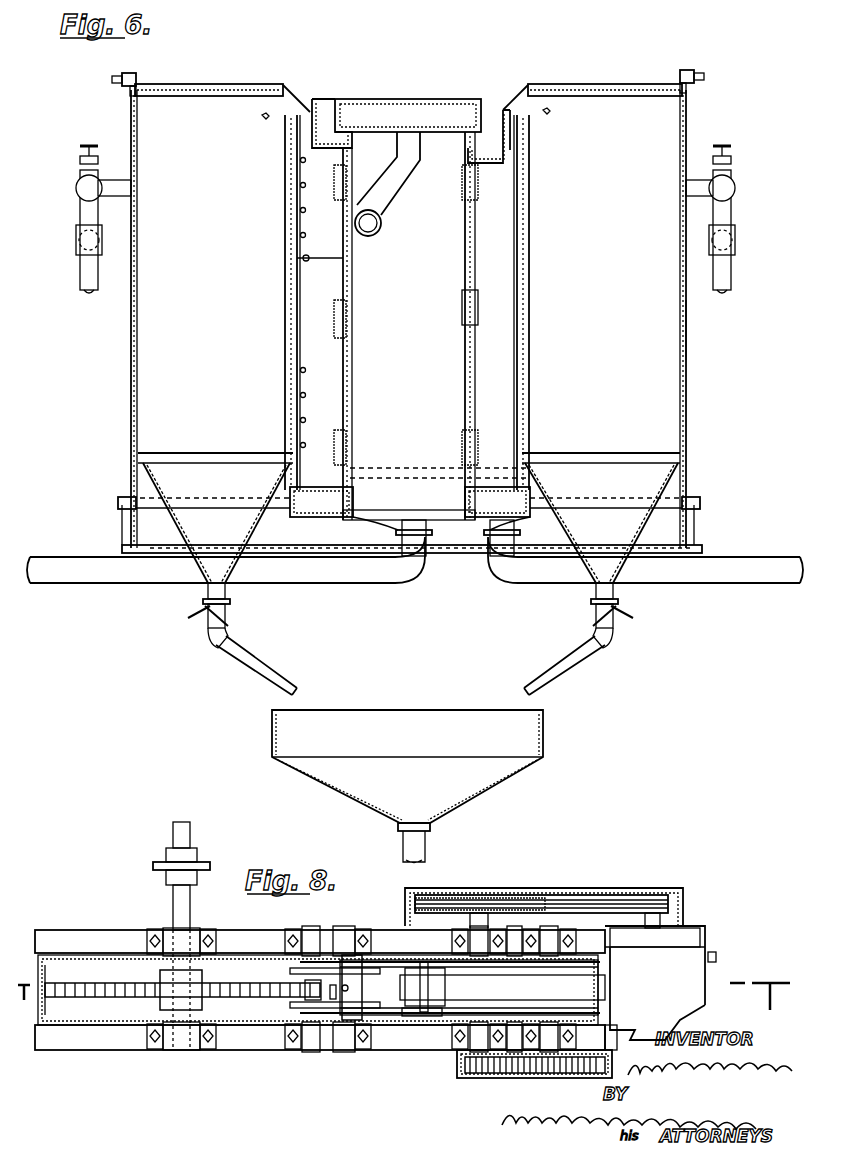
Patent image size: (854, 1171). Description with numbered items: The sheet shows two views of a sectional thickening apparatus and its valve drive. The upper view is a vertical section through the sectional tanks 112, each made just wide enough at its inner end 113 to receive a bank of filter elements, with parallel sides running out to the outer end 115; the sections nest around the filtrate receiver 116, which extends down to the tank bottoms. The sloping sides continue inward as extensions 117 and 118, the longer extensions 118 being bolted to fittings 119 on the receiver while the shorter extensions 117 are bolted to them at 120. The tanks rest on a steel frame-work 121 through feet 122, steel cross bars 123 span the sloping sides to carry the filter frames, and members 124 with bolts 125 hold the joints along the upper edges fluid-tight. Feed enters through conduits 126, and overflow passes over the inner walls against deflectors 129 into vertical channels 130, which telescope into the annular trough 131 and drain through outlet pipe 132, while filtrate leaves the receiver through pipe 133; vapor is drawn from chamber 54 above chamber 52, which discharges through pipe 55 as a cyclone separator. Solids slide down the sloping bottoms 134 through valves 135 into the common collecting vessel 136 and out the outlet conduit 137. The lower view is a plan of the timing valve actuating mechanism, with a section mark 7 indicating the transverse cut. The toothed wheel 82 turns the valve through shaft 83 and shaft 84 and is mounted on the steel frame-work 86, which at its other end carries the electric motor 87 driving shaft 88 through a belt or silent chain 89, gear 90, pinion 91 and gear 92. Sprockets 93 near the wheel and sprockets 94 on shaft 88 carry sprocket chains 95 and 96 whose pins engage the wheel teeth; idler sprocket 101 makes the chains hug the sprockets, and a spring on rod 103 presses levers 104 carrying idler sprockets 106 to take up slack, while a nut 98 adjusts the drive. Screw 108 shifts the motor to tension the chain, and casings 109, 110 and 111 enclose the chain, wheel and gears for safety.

In FIG. 6, the chamber 52 is at (458, 107).
In FIG. 6, the chamber 54 is at (346, 106).
In FIG. 6, the pipe 55 is at (384, 196).
In FIG. 6, the sectional tank 112 is at (158, 380).
In FIG. 6, the inner end 113 is at (296, 275).
In FIG. 6, the outer end 115 is at (686, 340).
In FIG. 6, the filtrate receiver 116 is at (440, 376).
In FIG. 6, the extension 117 is at (310, 260).
In FIG. 6, the extension 118 is at (468, 268).
In FIG. 6, the fitting 119 is at (464, 188).
In FIG. 6, the bolted joint 120 is at (300, 210).
In FIG. 6, the steel frame-work 121 is at (690, 522).
In FIG. 6, the feet 122 is at (118, 502).
In FIG. 6, the steel cross bar 123 is at (262, 116).
In FIG. 6, the member 124 is at (126, 86).
In FIG. 6, the bolt 125 is at (117, 78).
In FIG. 6, the conduit 126 is at (82, 274).
In FIG. 6, the deflector 129 is at (498, 108).
In FIG. 6, the vertical channel 130 is at (318, 323).
In FIG. 6, the annular trough 131 is at (290, 492).
In FIG. 6, the outlet pipe 132 is at (538, 572).
In FIG. 6, the pipe 133 is at (352, 572).
In FIG. 6, the sloping bottom 134 is at (175, 560).
In FIG. 6, the valve 135 is at (190, 622).
In FIG. 6, the common collecting vessel 136 is at (432, 720).
In FIG. 6, the outlet conduit 137 is at (425, 845).
In FIG. 8, the section line 7 is at (404, 997).
In FIG. 8, the toothed wheel 82 is at (62, 986).
In FIG. 8, the shaft 83 is at (182, 898).
In FIG. 8, the shaft 84 is at (172, 832).
In FIG. 8, the steel frame-work 86 is at (126, 1054).
In FIG. 8, the electric motor 87 is at (678, 962).
In FIG. 8, the shaft 88 is at (575, 986).
In FIG. 8, the belt or silent chain 89 is at (580, 897).
In FIG. 8, the gear 90 is at (500, 897).
In FIG. 8, the pinion 91 is at (470, 1078).
In FIG. 8, the gear 92 is at (575, 1073).
In FIG. 8, the sprocket 93 is at (280, 966).
In FIG. 8, the sprocket 94 is at (560, 964).
In FIG. 8, the sprocket chain 95 is at (403, 1018).
In FIG. 8, the sprocket chain 96 is at (398, 962).
In FIG. 8, the nut 98 is at (305, 998).
In FIG. 8, the idler sprocket 101 is at (330, 1020).
In FIG. 8, the rod 103 is at (348, 988).
In FIG. 8, the lever 104 is at (348, 962).
In FIG. 8, the idler sprocket 106 is at (426, 976).
In FIG. 8, the screw 108 is at (718, 958).
In FIG. 8, the protecting casing 109 is at (668, 890).
In FIG. 8, the casing 110 is at (90, 1018).
In FIG. 8, the casing 111 is at (515, 1078).